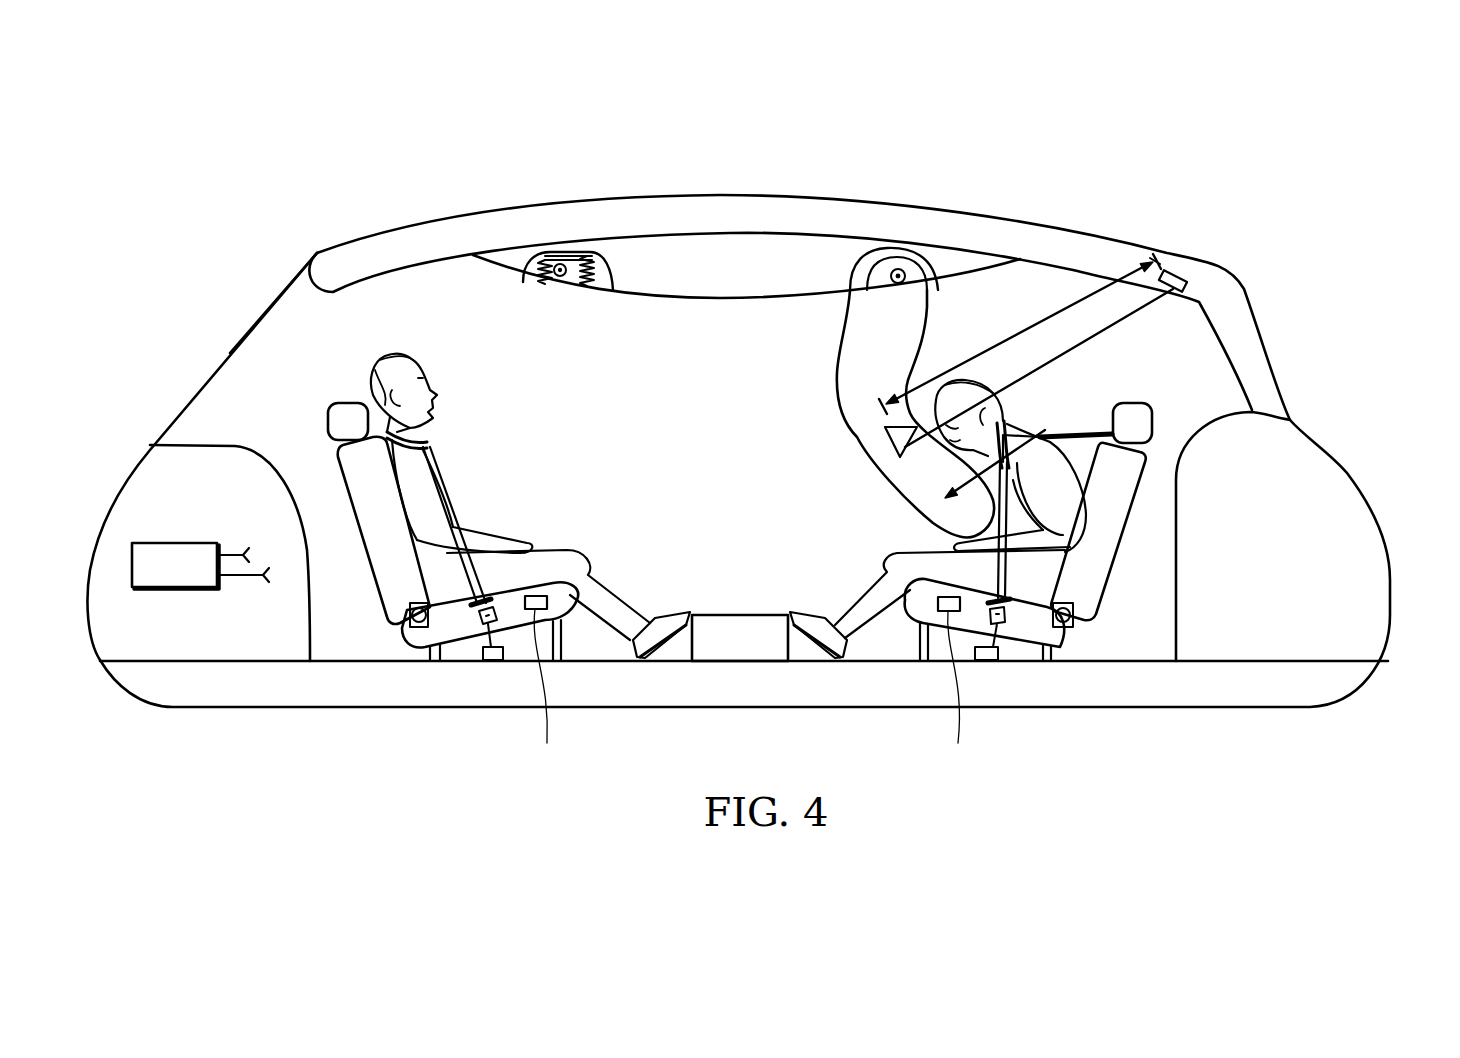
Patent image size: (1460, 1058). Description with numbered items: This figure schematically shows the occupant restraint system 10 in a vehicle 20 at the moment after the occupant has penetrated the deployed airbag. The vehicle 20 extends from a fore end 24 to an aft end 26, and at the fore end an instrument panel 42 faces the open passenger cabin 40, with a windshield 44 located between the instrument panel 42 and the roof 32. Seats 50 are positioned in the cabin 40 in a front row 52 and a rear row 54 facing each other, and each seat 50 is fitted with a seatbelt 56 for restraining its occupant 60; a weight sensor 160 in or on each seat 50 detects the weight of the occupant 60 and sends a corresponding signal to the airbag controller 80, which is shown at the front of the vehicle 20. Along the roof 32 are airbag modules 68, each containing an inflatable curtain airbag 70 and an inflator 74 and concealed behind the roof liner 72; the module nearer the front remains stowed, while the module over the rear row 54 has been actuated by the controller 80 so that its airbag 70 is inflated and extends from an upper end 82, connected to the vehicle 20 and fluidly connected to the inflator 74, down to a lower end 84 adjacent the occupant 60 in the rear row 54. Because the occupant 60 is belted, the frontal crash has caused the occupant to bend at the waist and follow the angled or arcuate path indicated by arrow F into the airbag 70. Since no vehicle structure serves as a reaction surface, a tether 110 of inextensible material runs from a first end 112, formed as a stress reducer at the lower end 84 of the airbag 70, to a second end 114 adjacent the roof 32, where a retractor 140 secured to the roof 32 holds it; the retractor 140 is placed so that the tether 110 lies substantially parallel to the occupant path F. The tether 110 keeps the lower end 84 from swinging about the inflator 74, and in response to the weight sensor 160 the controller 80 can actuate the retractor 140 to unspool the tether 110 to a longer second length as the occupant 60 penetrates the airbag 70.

The occupant restraint system 10 is at (923, 228).
The vehicle 20 is at (1367, 579).
The fore end 24 is at (160, 380).
The aft end 26 is at (1332, 383).
The roof 32 is at (1067, 243).
The passenger cabin 40 is at (697, 458).
The instrument panel 42 is at (247, 450).
The windshield 44 is at (230, 350).
The seat 50 is at (397, 600).
The front row 52 is at (477, 722).
The rear row 54 is at (1002, 724).
The seatbelt 56 is at (457, 520).
The occupant 60 is at (427, 473).
The airbag module 68 is at (610, 267).
The inflatable curtain airbag 70 is at (586, 242).
The roof liner 72 is at (720, 298).
The inflator 74 is at (563, 283).
The airbag controller 80 is at (177, 557).
The upper end 82 is at (873, 256).
The lower end 84 is at (901, 521).
The first tether 110 is at (1098, 351).
The first end 112 is at (877, 463).
The second end 114 is at (1137, 310).
The first retractor 140 is at (1177, 277).
The weight sensor 160 is at (749, 684).
The arrow F is at (1097, 458).